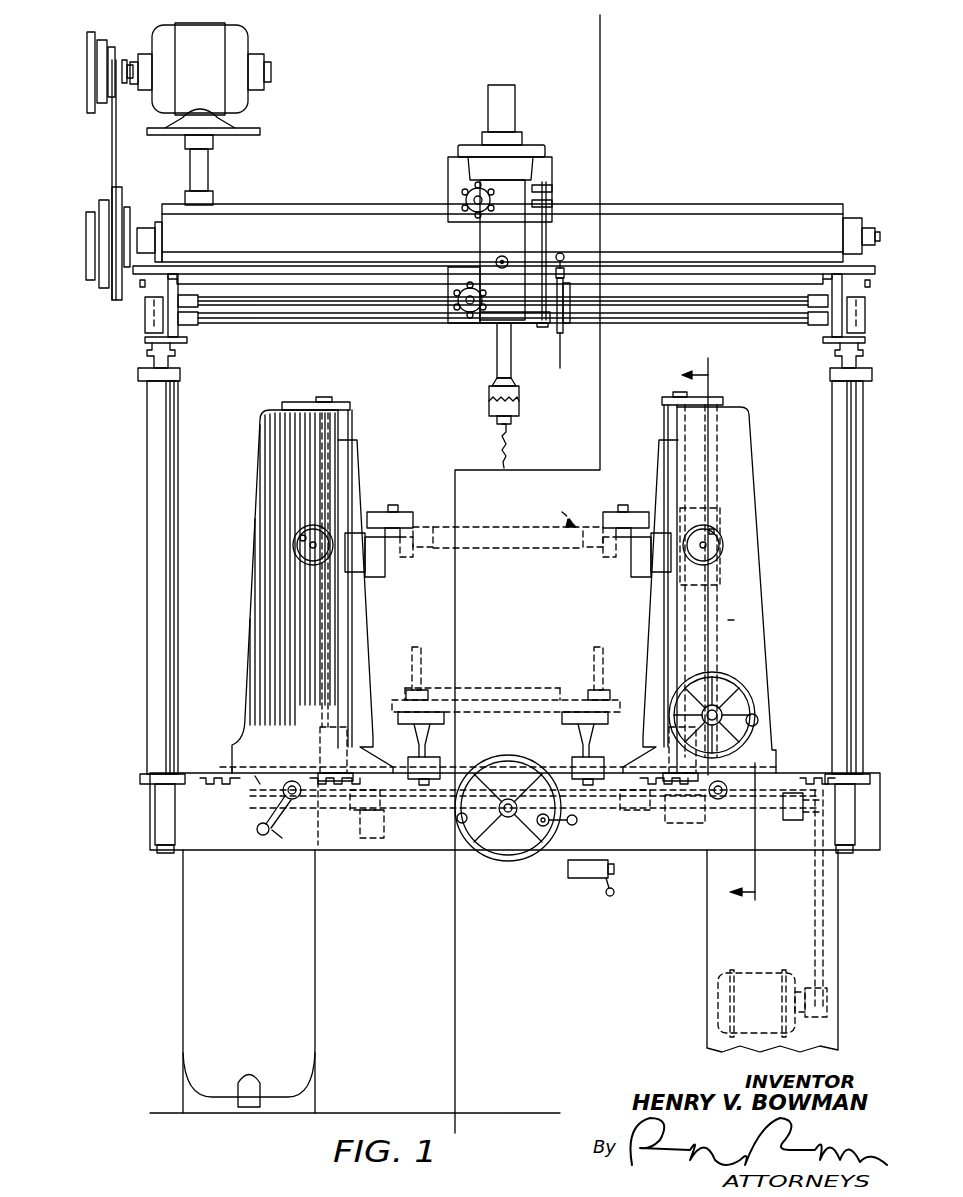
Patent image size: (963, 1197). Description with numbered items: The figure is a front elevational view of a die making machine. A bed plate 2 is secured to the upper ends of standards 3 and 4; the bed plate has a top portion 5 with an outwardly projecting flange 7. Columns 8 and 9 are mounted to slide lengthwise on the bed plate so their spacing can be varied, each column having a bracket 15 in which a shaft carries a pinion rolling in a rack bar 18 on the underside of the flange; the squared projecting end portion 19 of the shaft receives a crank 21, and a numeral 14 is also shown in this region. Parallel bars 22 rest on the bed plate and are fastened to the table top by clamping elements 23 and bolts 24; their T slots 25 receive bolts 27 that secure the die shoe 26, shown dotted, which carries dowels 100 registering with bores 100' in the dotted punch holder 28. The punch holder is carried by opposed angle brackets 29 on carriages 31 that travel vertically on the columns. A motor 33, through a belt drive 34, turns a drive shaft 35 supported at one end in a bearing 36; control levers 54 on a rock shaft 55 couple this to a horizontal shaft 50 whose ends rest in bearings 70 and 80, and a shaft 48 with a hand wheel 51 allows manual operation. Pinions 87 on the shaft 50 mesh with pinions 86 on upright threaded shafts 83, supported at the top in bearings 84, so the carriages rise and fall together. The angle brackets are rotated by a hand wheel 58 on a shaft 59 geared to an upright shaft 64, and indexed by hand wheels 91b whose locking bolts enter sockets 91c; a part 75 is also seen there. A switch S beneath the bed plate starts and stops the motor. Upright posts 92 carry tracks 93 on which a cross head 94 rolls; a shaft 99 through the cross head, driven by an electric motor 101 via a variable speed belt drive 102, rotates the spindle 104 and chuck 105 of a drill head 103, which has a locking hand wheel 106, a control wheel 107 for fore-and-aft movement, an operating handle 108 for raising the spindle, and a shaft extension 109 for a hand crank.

The bed plate 2 is at (600, 32).
The standard 3 is at (197, 975).
The standard 4 is at (733, 953).
The top portion 5 is at (190, 765).
The flange 7 is at (208, 771).
The column 8 is at (278, 612).
The column 9 is at (747, 598).
The rack 14 is at (246, 783).
The bracket 15 is at (262, 782).
The rack bar 18 is at (208, 786).
The projecting end portion 19 is at (292, 800).
The crank 21 is at (280, 838).
The parallel bar 22 is at (398, 718).
The clamping element 23 is at (418, 779).
The bolt 24 is at (426, 786).
The T slot 25 is at (418, 728).
The die shoe 26 is at (474, 686).
The bolt 27 is at (413, 684).
The punch holder 28 is at (490, 556).
The angle bracket 29 is at (377, 512).
The carriage 31 is at (353, 445).
The motor 33 is at (767, 970).
The belt drive 34 is at (825, 912).
The drive shaft 35 is at (685, 825).
The bearing 36 is at (792, 822).
The shaft 48 is at (487, 853).
The shaft 50 is at (317, 850).
The hand wheel 51 is at (511, 862).
The control lever 54 is at (560, 825).
The rock shaft 55 is at (547, 862).
The hand wheel 58 is at (728, 702).
The shaft 59 is at (722, 713).
The upright shaft 64 is at (718, 617).
The bearing 70 is at (372, 840).
The clamp block 75 is at (353, 557).
The bearing 80 is at (623, 895).
The threaded shaft 83 is at (327, 487).
The bearing 84 is at (332, 398).
The pinion 86 is at (327, 767).
The pinion 87 is at (348, 820).
The hand wheel 91b is at (292, 552).
The socket 91c is at (300, 538).
The upright post 92 is at (153, 588).
The track 93 is at (146, 362).
The cross head 94 is at (752, 202).
The shaft 99 is at (135, 228).
The dowel 100 is at (512, 650).
The bore 100' is at (505, 569).
The electric motor 101 is at (218, 44).
The variable speed belt drive 102 is at (112, 170).
The drill head 103 is at (530, 130).
The spindle 104 is at (512, 354).
The chuck 105 is at (521, 408).
The hand wheel 106 is at (477, 212).
The control wheel 107 is at (468, 313).
The operating handle 108 is at (561, 360).
The extension 109 is at (870, 228).
The switch S is at (595, 890).